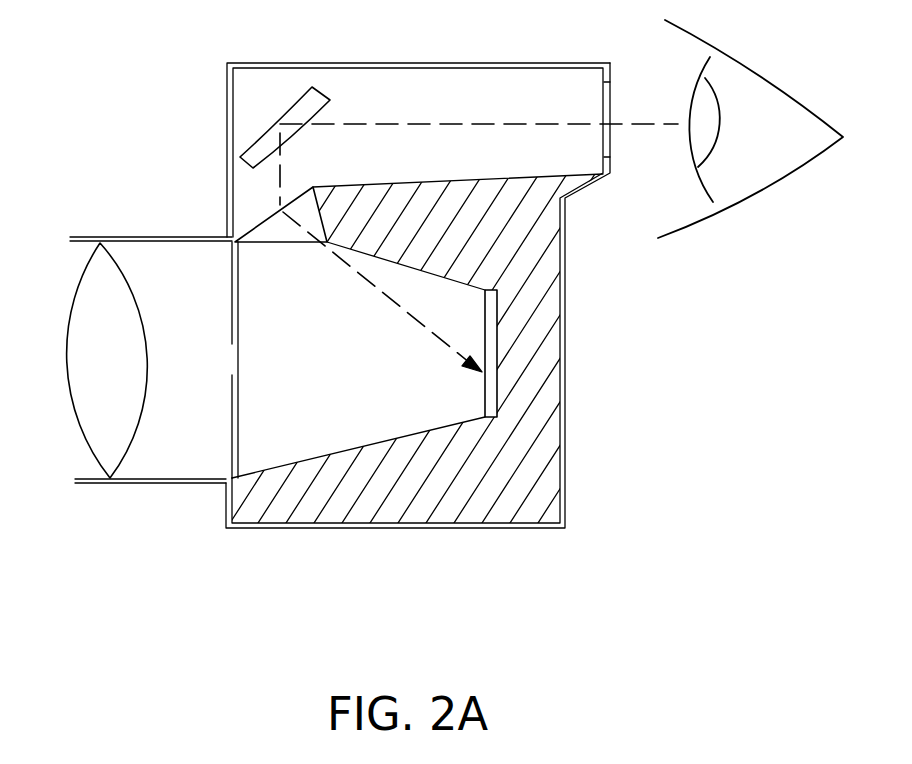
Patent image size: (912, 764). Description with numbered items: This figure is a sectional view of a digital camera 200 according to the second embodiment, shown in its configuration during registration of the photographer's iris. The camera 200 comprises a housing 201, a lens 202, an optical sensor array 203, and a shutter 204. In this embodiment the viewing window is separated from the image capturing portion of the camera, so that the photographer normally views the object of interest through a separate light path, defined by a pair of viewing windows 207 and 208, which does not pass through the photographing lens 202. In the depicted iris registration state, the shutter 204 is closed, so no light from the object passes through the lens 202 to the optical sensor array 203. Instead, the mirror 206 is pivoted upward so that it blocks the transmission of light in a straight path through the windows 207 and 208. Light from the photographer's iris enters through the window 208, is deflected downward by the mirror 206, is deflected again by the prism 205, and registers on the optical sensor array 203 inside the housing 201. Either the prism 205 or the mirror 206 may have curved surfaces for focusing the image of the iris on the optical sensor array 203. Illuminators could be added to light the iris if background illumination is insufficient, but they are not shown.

The camera 200 is at (128, 112).
The housing 201 is at (545, 529).
The lens 202 is at (68, 383).
The optical sensor array 203 is at (498, 350).
The shutter 204 is at (233, 412).
The prism 205 is at (268, 228).
The mirror 206 is at (290, 103).
The viewing window 207 is at (225, 108).
The viewing window 208 is at (613, 122).